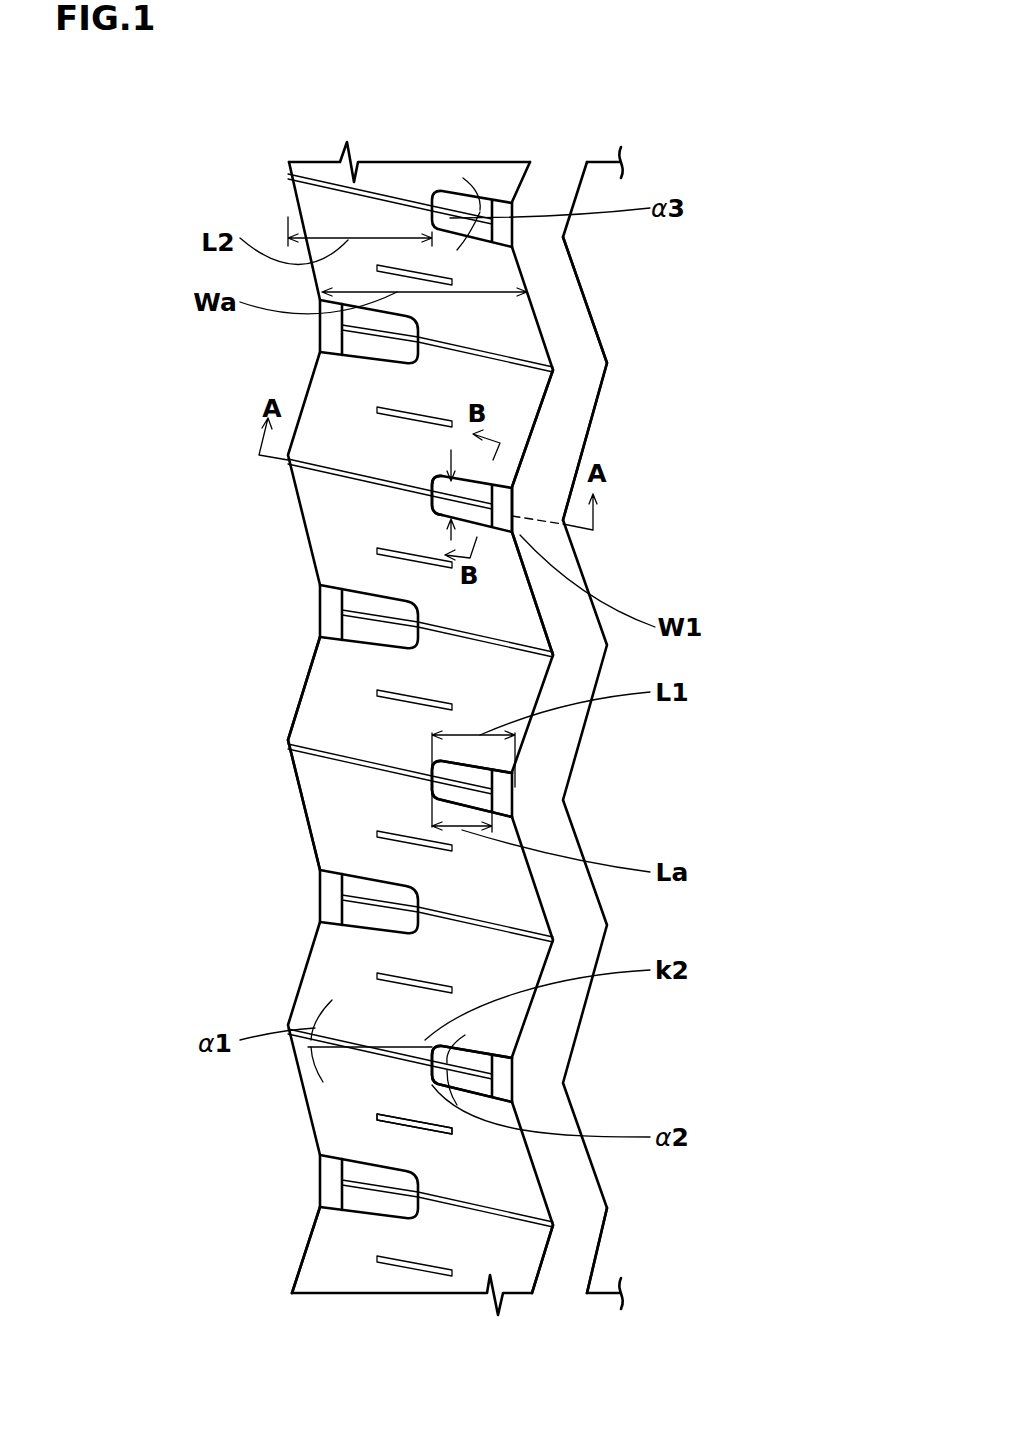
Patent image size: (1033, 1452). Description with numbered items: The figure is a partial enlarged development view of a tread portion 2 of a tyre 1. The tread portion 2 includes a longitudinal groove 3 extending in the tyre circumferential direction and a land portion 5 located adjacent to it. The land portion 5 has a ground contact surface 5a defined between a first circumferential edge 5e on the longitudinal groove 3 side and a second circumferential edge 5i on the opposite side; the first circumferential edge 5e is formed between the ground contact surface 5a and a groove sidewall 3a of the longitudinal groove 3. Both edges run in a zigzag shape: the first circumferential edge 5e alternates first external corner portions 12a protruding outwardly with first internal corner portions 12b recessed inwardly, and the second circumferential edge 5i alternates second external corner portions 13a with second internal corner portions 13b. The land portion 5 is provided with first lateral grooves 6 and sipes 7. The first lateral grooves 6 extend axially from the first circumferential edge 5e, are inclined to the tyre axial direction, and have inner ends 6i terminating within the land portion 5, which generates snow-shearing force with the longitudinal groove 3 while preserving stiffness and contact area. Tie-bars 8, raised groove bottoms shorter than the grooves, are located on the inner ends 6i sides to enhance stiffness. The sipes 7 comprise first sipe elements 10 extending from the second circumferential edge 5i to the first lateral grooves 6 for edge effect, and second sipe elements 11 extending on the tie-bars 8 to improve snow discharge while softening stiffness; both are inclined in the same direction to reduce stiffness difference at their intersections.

The tyre 1 is at (810, 137).
The tread portion 2 is at (732, 165).
The longitudinal groove 3 is at (553, 182).
The groove sidewall 3a is at (548, 1190).
The land portion 5 is at (413, 177).
The ground contact surface 5a is at (337, 1102).
The first circumferential edge 5e is at (543, 1262).
The second circumferential edge 5i is at (303, 1255).
The first lateral grooves 6 is at (503, 236).
The inner ends 6i is at (433, 512).
The sipes 7 is at (377, 477).
The tie-bars 8 is at (470, 797).
The first sipe elements 10 is at (345, 1035).
The second sipe elements 11 is at (470, 1052).
The first external corner portions 12a is at (596, 358).
The first internal corner portions 12b is at (526, 532).
The second external corner portions 13a is at (259, 752).
The second internal corner portions 13b is at (288, 620).